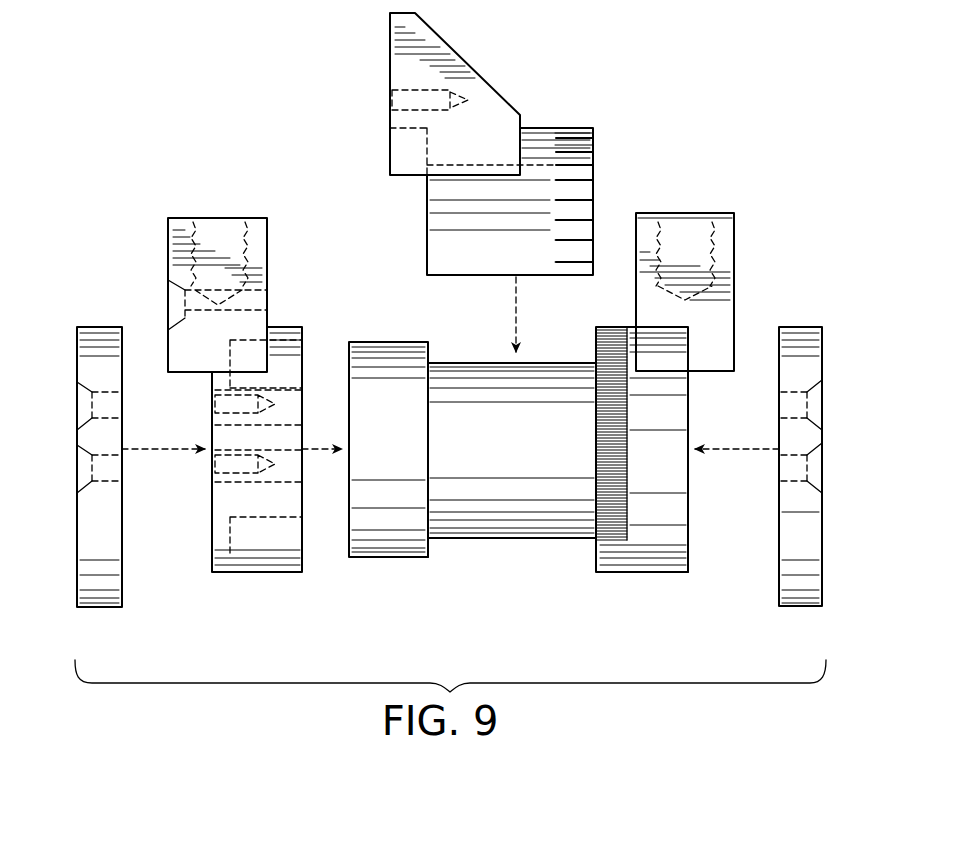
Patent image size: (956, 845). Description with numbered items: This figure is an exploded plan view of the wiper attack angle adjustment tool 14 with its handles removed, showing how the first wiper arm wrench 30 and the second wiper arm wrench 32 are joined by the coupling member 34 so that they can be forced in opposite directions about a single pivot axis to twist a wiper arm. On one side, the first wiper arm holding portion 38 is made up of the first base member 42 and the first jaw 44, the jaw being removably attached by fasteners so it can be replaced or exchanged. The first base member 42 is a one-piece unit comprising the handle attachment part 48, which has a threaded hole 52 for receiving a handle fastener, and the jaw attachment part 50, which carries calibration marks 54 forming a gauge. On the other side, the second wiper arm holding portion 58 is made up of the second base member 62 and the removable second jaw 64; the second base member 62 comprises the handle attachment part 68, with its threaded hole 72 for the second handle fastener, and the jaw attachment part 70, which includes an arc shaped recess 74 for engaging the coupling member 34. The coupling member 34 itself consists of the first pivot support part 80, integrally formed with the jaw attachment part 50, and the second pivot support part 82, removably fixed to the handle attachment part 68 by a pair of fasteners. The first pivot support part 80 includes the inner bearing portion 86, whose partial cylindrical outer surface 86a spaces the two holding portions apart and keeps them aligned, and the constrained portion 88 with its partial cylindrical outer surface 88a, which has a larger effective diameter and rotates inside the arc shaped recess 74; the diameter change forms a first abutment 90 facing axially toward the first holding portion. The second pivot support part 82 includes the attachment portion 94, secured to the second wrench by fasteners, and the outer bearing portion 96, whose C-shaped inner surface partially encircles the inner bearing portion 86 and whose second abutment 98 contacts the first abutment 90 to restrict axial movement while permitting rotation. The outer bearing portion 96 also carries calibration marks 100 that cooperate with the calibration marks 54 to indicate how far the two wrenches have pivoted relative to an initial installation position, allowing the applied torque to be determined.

The wiper attack angle adjustment tool 14 is at (708, 106).
The first wiper arm wrench 30 is at (788, 230).
The second wiper arm wrench 32 is at (128, 204).
The coupling member 34 is at (350, 178).
The first wiper arm holding portion 38 is at (648, 636).
The first base member 42 is at (655, 577).
The first jaw 44 is at (777, 577).
The handle attachment part 48 is at (735, 286).
The jaw attachment part 50 is at (690, 418).
The threaded hole 52 is at (668, 230).
The calibration marks 54 is at (596, 493).
The second wiper arm holding portion 58 is at (240, 636).
The second base member 62 is at (238, 577).
The second jaw 64 is at (124, 577).
The handle attachment part 68 is at (170, 256).
The jaw attachment part 70 is at (212, 385).
The threaded hole 72 is at (200, 232).
The arc shaped recess 74 is at (258, 548).
The first pivot support part 80 is at (386, 336).
The second pivot support part 82 is at (421, 210).
The inner bearing portion 86 is at (480, 540).
The partial cylindrical outer surface 86a is at (486, 464).
The constrained portion 88 is at (385, 558).
The partial cylindrical outer surface 88a is at (364, 498).
The first abutment 90 is at (428, 550).
The attachment portion 94 is at (442, 60).
The outer bearing portion 96 is at (458, 264).
The second abutment 98 is at (425, 262).
The calibration marks 100 is at (565, 150).